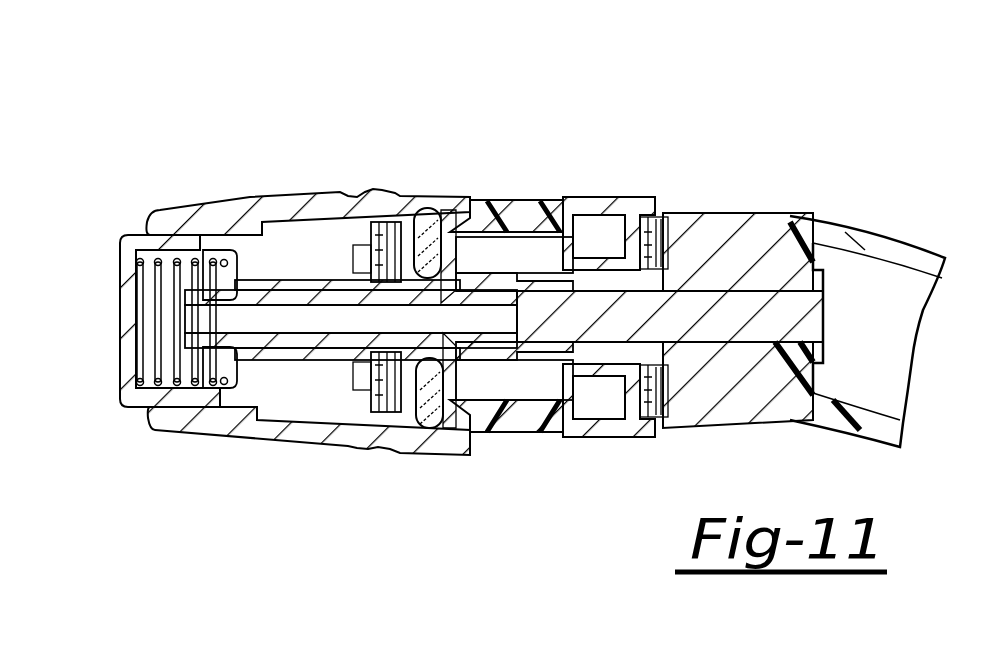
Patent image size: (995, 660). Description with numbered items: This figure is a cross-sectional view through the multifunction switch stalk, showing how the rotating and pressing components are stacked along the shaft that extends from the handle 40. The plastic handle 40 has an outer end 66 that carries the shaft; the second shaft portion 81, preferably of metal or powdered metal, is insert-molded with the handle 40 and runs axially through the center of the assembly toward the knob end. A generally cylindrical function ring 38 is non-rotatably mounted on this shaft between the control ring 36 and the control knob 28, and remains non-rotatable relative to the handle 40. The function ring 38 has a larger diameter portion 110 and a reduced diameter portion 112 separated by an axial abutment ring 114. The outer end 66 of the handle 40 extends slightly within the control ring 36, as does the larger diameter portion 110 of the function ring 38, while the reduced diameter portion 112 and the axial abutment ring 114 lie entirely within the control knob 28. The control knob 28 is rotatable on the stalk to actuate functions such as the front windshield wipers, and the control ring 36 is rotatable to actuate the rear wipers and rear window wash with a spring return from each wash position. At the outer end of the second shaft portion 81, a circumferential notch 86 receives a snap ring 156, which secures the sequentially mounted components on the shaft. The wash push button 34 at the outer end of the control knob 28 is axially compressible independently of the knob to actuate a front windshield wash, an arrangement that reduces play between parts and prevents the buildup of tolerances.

The wash push button 34 is at (112, 237).
The circumferential notch 86 is at (150, 235).
The snap ring 156 is at (205, 265).
The second shaft portion 81 is at (282, 280).
The reduced diameter portion 112 is at (390, 222).
The control knob 28 is at (398, 180).
The axial abutment ring 114 is at (455, 228).
The function ring 38 is at (504, 198).
The larger diameter portion 110 is at (540, 212).
The control ring 36 is at (622, 182).
The outer end 66 is at (713, 223).
The handle 40 is at (820, 200).